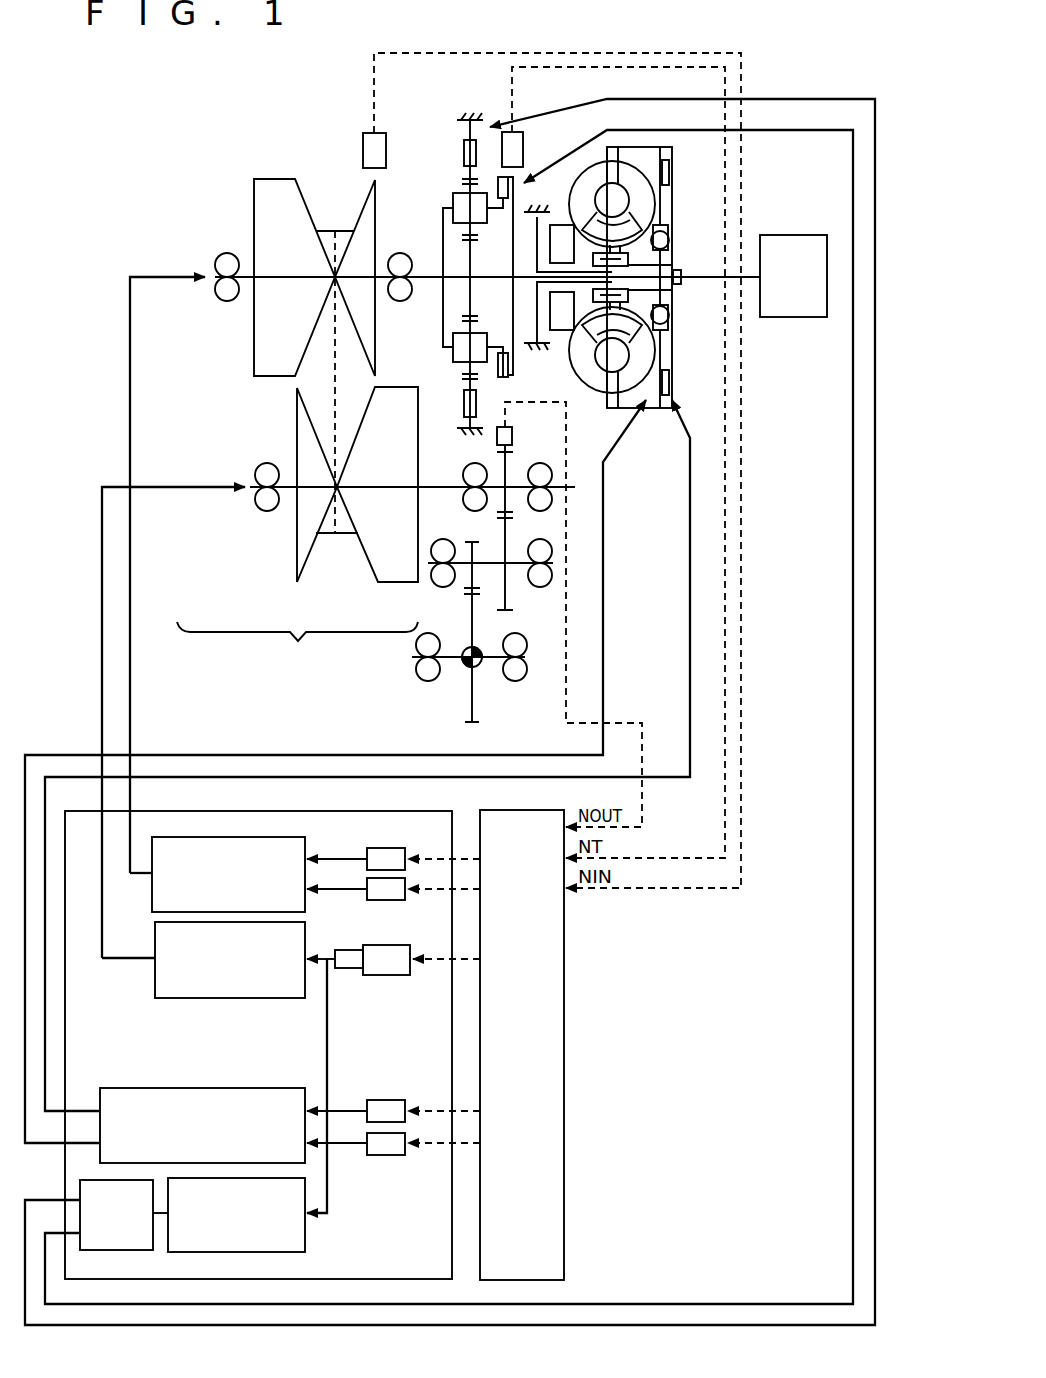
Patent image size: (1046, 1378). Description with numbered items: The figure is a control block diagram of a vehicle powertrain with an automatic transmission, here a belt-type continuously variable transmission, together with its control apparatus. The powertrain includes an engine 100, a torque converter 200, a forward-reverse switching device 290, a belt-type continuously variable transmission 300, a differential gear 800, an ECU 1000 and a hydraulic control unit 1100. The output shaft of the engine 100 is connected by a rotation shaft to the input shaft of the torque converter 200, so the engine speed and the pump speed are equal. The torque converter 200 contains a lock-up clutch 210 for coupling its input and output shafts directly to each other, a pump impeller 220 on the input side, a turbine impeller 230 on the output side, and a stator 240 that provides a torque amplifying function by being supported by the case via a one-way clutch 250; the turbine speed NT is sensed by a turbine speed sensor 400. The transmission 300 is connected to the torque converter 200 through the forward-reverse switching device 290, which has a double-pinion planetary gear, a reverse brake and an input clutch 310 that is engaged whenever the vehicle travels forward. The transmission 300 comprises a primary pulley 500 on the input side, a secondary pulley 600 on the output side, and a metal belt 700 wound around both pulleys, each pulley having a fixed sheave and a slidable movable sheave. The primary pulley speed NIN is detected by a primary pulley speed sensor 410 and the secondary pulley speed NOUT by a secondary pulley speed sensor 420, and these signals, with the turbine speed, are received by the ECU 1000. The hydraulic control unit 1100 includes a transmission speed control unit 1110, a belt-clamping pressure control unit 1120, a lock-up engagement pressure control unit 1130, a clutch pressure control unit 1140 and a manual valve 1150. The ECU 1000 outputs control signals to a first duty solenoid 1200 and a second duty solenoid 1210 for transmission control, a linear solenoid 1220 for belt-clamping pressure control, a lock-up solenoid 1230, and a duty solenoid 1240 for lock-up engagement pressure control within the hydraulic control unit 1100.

The engine 100 is at (787, 236).
The torque converter 200 is at (625, 259).
The lock-up clutch 210 is at (670, 378).
The pump impeller 220 is at (587, 180).
The turbine impeller 230 is at (633, 173).
The stator 240 is at (655, 227).
The one-way clutch 250 is at (625, 262).
The forward-reverse switching device 290 is at (450, 140).
The belt-type continuously variable transmission 300 is at (297, 644).
The input clutch 310 is at (497, 187).
The turbine speed sensor 400 is at (520, 143).
The primary pulley speed sensor 410 is at (366, 148).
The secondary pulley speed sensor 420 is at (513, 441).
The primary pulley 500 is at (260, 337).
The secondary pulley 600 is at (312, 548).
The belt 700 is at (337, 382).
The differential gear 800 is at (486, 676).
The ECU 1000 is at (564, 1018).
The hydraulic control unit 1100 is at (398, 811).
The transmission speed control unit 1110 is at (152, 893).
The belt-clamping pressure control unit 1120 is at (233, 998).
The lock-up engagement pressure control unit 1130 is at (218, 1087).
The clutch pressure control unit 1140 is at (307, 1240).
The manual valve 1150 is at (115, 1250).
The duty solenoid (1) for transmission control 1200 is at (378, 900).
The duty solenoid (2) for transmission control 1210 is at (390, 848).
The linear solenoid for belt-clamping pressure control 1220 is at (380, 975).
The lock-up solenoid 1230 is at (390, 1100).
The duty solenoid for lock-up engagement pressure control 1240 is at (390, 1155).